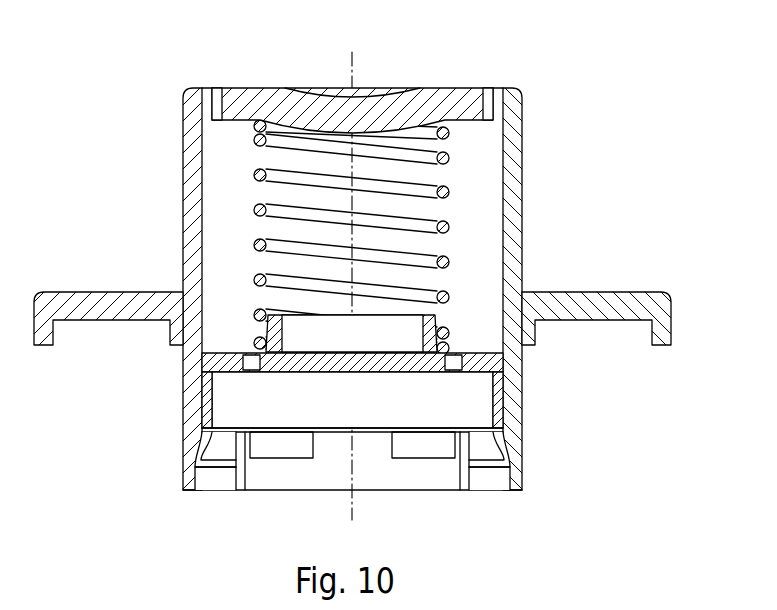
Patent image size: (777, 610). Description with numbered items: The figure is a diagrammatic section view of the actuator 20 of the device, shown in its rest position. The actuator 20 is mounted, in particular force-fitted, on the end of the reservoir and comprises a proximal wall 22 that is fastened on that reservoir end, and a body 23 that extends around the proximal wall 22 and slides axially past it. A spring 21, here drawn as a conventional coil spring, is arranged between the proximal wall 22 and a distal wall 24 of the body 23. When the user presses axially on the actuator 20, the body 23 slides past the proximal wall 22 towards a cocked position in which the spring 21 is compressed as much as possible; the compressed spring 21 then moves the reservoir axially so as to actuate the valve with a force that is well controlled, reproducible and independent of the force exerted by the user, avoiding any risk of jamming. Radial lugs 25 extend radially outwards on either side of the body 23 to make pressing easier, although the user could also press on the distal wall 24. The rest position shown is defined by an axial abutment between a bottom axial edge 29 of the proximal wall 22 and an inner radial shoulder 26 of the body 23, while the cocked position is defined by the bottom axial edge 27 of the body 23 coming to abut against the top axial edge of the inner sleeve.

The actuator 20 is at (547, 212).
The spring 21 is at (437, 180).
The proximal wall 22 is at (422, 362).
The body 23 is at (197, 172).
The distal wall 24 is at (273, 98).
The radial lugs 25 is at (125, 300).
The inner radial shoulder 26 is at (205, 440).
The bottom axial edge of the body 27 is at (187, 492).
The bottom axial edge of the proximal wall 29 is at (205, 412).